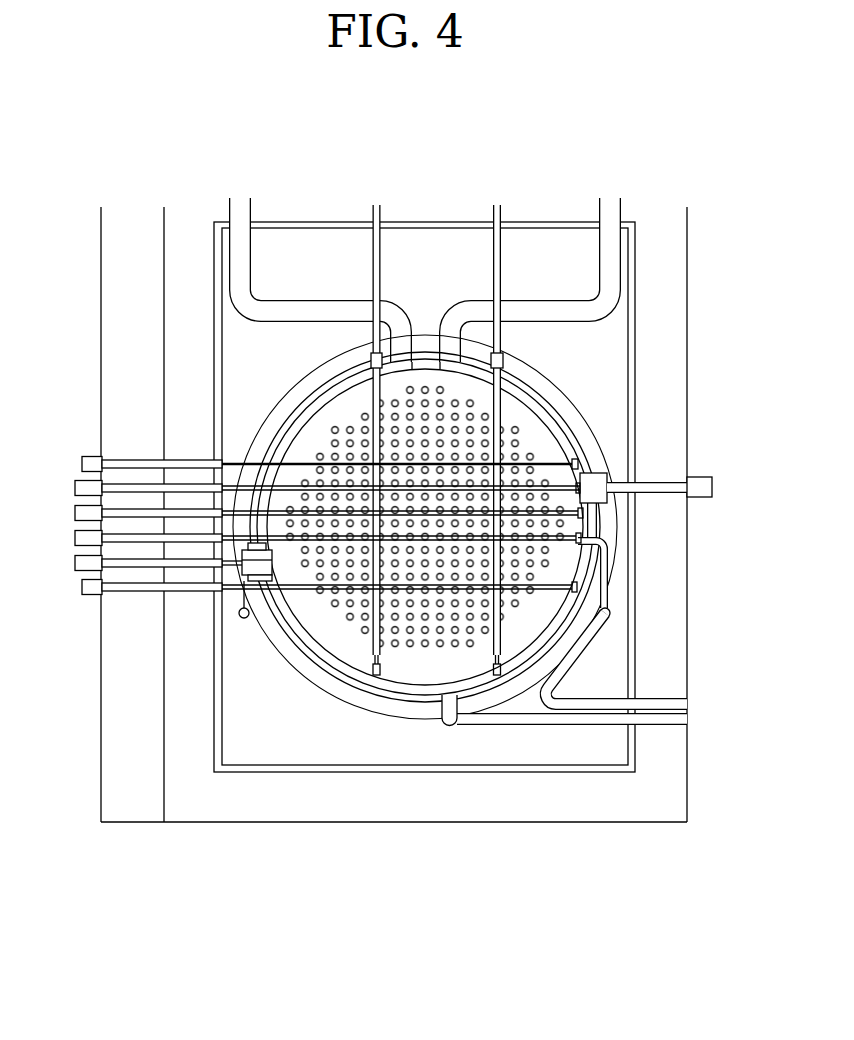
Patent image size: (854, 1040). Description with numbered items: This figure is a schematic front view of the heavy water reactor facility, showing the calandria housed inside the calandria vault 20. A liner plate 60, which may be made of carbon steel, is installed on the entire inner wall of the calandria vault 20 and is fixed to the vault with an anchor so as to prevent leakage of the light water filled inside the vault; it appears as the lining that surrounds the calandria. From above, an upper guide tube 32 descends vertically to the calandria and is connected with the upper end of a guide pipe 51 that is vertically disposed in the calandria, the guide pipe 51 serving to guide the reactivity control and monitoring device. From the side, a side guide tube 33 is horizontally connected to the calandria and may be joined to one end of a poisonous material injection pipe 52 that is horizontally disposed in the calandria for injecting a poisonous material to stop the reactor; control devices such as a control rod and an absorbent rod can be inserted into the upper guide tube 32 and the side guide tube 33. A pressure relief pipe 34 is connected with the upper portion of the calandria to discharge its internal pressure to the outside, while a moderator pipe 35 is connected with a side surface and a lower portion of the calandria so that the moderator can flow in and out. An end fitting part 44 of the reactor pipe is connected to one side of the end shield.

The calandria vault 20 is at (690, 244).
The upper guide tube 32 is at (500, 251).
The side guide tube 33 is at (142, 586).
The pressure relief pipe 34 is at (600, 244).
The moderator pipe 35 is at (662, 730).
The end fitting part 44 is at (468, 648).
The guide pipe 51 is at (373, 395).
The poisonous material injection pipe 52 is at (298, 590).
The liner plate 60 is at (373, 762).